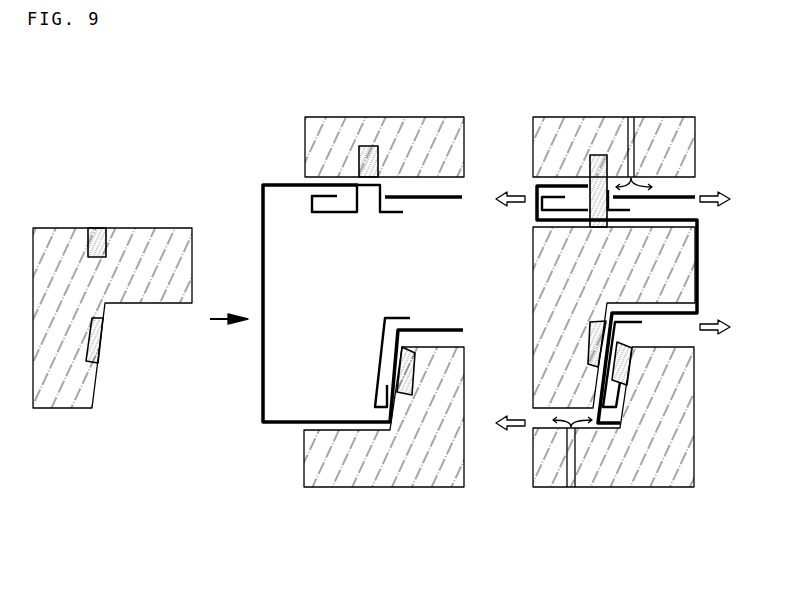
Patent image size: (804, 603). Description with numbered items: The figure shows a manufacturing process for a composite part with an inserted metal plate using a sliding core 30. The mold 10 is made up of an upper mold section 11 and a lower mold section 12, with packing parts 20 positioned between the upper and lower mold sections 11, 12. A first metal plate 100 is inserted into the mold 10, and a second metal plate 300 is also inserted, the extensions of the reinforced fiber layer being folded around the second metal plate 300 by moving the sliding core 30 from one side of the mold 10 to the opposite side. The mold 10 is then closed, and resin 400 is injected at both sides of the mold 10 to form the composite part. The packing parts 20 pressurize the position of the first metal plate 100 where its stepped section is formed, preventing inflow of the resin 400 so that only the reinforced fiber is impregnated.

The mold 10 is at (444, 551).
The upper mold section 11 is at (415, 127).
The lower mold section 12 is at (355, 480).
The packing parts 20 is at (366, 145).
The sliding core 30 is at (138, 242).
The first metal plate 100 is at (358, 183).
The second metal plate 300 is at (408, 318).
The resin 400 is at (634, 176).